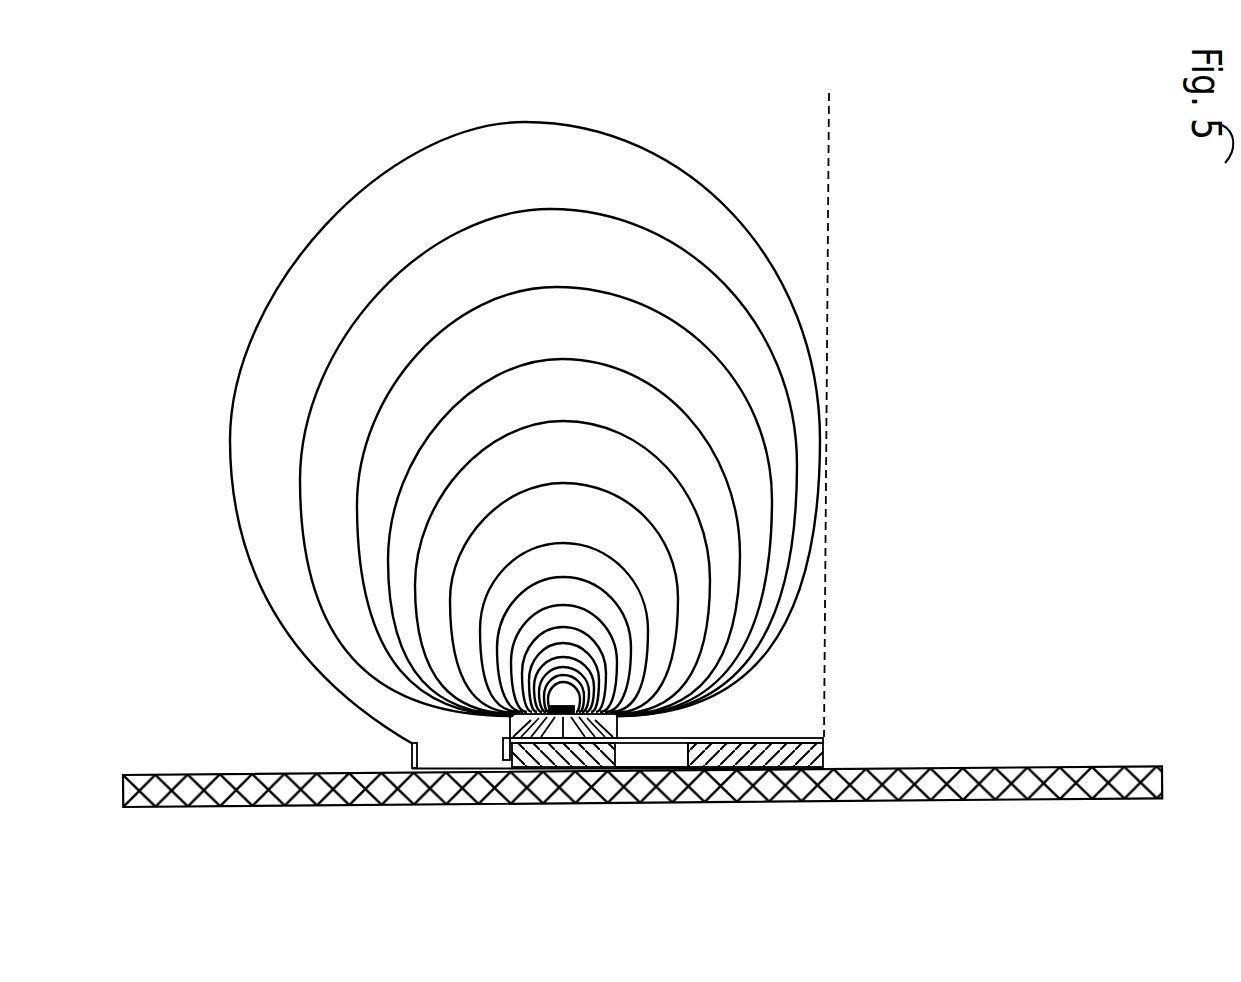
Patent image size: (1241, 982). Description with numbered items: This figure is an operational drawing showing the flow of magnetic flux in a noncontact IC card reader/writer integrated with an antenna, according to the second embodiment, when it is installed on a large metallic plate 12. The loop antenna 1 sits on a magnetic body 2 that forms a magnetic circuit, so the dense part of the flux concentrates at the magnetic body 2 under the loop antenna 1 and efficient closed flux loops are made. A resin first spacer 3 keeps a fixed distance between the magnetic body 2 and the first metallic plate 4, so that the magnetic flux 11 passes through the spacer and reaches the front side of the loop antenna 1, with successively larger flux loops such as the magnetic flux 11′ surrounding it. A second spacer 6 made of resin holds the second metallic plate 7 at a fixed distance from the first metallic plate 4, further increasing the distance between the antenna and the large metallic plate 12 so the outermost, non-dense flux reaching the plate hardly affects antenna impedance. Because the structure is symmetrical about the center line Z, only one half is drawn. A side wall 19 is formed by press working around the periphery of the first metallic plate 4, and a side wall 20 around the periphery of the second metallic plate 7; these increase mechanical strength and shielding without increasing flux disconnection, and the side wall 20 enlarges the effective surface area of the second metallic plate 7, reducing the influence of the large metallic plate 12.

The loop antenna 1 is at (573, 697).
The magnetic body 2 is at (617, 690).
The first spacer 3 is at (640, 712).
The first metallic plate 4 is at (690, 733).
The second spacer 6 is at (545, 765).
The second metallic plate 7 is at (653, 770).
The magnetic flux 11 is at (570, 487).
The magnetic flux 11′ is at (300, 533).
The large metallic plate 12 is at (733, 792).
The side wall 19 is at (503, 742).
The side wall 20 is at (407, 758).
The center line Z is at (831, 389).